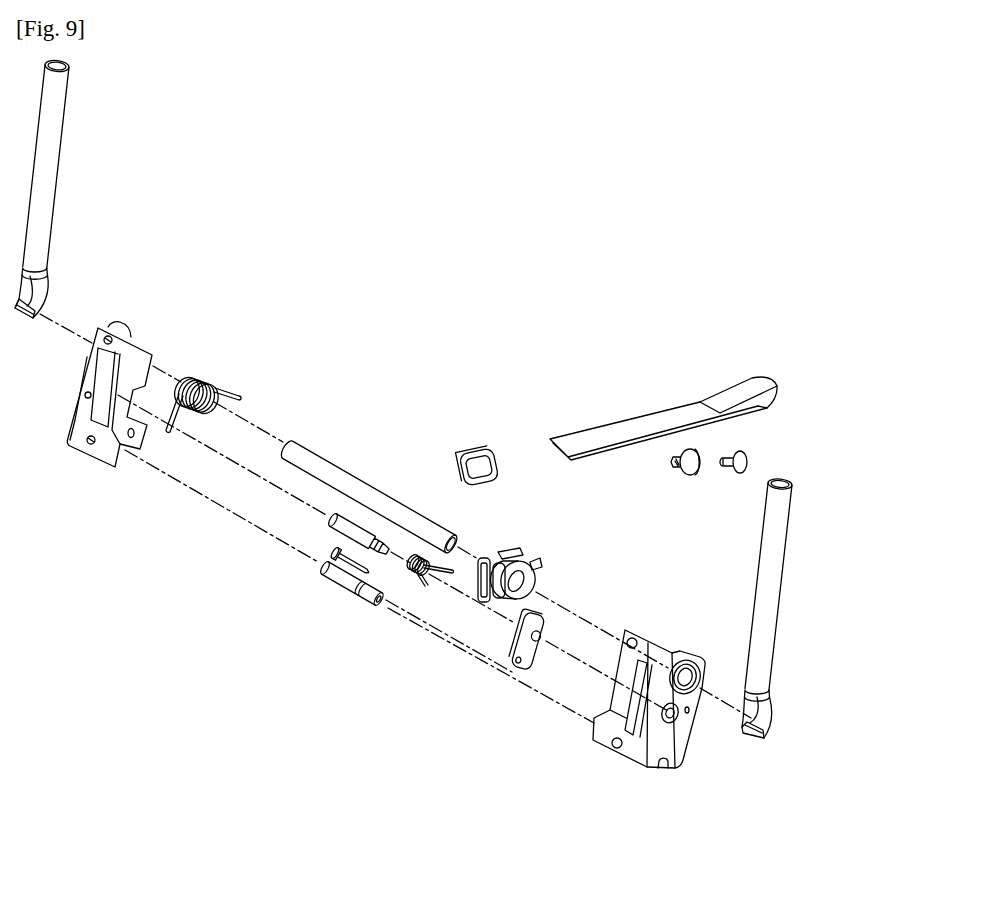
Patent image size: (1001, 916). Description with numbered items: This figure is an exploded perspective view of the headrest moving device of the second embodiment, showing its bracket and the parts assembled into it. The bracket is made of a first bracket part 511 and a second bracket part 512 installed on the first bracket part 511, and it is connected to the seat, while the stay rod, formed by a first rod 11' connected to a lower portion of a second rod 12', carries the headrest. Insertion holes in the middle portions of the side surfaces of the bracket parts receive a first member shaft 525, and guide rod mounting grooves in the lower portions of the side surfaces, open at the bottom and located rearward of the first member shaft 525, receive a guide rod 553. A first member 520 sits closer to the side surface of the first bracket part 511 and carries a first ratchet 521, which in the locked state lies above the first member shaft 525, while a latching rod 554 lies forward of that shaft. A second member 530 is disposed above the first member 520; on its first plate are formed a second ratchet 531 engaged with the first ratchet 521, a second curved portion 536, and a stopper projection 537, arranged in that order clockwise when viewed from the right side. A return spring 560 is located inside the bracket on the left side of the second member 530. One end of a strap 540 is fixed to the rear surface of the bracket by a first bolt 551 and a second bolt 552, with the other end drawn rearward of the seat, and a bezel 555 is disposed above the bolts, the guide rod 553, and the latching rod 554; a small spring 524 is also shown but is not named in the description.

The first bracket part 511 is at (625, 757).
The second bracket part 512 is at (118, 342).
The first member 520 is at (538, 652).
The first ratchet 521 is at (537, 637).
The spring 524 is at (417, 572).
The first member shaft 525 is at (340, 525).
The second member 530 is at (509, 586).
The second ratchet 531 is at (507, 600).
The second curved portion 536 is at (481, 564).
The stopper projection 537 is at (507, 553).
The strap 540 is at (627, 428).
The first bolt 551 is at (690, 474).
The second bolt 552 is at (760, 460).
The guide rod 553 is at (353, 582).
The latching rod 554 is at (332, 553).
The bezel 555 is at (478, 452).
The return spring 560 is at (198, 380).
The first rod 11' is at (369, 472).
The second rod 12' is at (806, 608).